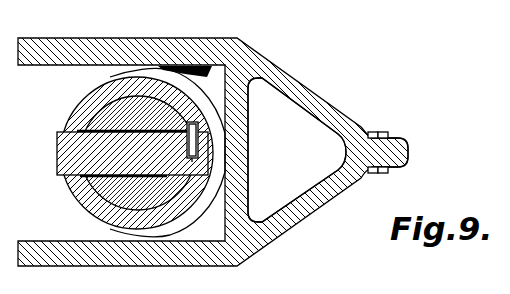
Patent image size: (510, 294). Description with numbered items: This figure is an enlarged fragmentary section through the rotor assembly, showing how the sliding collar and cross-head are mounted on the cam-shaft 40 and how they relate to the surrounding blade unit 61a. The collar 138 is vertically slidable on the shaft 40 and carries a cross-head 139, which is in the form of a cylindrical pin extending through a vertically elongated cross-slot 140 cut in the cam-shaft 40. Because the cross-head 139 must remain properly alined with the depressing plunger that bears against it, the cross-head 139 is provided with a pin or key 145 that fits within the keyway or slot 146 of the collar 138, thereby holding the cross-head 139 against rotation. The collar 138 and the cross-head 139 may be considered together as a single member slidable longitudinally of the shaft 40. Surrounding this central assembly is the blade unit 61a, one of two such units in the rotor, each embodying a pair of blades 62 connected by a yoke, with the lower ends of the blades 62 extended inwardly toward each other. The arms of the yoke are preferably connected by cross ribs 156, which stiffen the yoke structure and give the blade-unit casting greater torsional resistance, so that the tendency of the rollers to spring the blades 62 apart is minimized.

The cam-shaft 40 is at (128, 105).
The cross-slot 140 is at (94, 128).
The collar 138 is at (77, 128).
The cross-head 139 is at (56, 133).
The pin or key 145 is at (204, 147).
The keyway or slot 146 is at (199, 131).
The cross ribs 156 is at (236, 175).
The blade unit 61a is at (338, 60).
The blades 62 is at (411, 148).